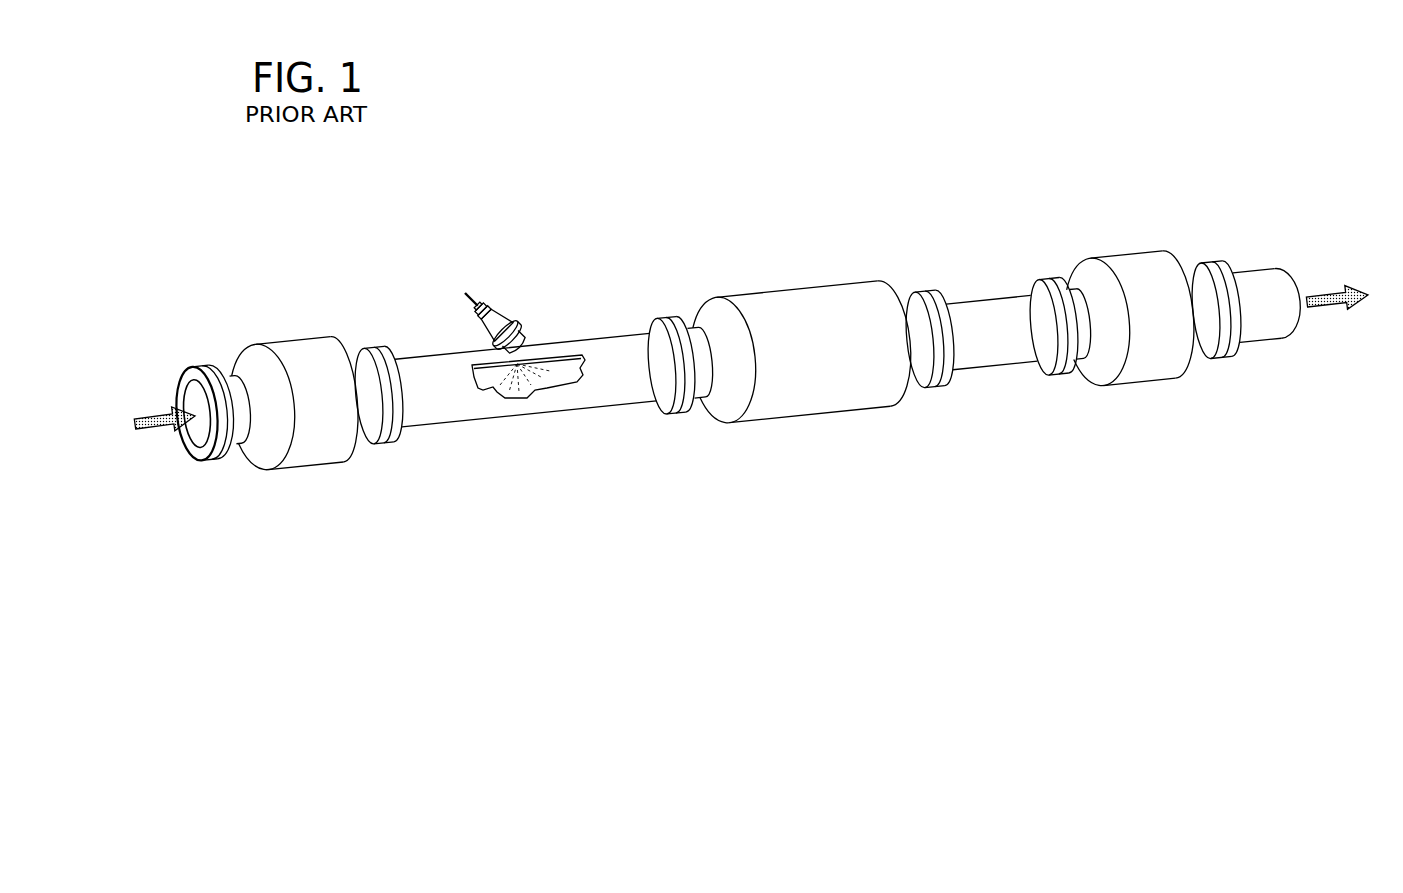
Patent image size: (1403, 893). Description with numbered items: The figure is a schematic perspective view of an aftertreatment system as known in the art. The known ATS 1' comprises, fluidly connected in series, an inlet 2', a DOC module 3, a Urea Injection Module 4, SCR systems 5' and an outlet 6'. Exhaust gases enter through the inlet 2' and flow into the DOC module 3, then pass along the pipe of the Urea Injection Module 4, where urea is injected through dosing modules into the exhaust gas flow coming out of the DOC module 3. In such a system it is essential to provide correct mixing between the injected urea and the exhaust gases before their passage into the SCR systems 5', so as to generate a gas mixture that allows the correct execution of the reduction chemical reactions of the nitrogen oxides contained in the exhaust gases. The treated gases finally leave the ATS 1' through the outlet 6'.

The ATS 1' is at (751, 339).
The inlet 2' is at (185, 447).
The DOC module 3 is at (316, 488).
The Urea Injection Module 4 is at (568, 438).
The SCR systems 5' is at (977, 374).
The outlet 6' is at (1300, 266).